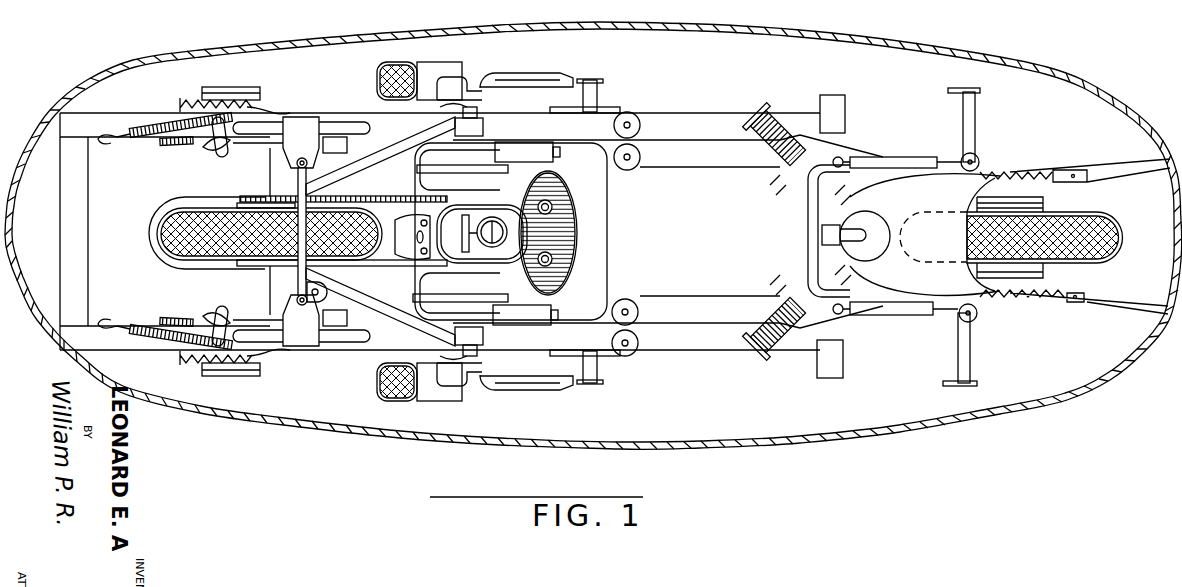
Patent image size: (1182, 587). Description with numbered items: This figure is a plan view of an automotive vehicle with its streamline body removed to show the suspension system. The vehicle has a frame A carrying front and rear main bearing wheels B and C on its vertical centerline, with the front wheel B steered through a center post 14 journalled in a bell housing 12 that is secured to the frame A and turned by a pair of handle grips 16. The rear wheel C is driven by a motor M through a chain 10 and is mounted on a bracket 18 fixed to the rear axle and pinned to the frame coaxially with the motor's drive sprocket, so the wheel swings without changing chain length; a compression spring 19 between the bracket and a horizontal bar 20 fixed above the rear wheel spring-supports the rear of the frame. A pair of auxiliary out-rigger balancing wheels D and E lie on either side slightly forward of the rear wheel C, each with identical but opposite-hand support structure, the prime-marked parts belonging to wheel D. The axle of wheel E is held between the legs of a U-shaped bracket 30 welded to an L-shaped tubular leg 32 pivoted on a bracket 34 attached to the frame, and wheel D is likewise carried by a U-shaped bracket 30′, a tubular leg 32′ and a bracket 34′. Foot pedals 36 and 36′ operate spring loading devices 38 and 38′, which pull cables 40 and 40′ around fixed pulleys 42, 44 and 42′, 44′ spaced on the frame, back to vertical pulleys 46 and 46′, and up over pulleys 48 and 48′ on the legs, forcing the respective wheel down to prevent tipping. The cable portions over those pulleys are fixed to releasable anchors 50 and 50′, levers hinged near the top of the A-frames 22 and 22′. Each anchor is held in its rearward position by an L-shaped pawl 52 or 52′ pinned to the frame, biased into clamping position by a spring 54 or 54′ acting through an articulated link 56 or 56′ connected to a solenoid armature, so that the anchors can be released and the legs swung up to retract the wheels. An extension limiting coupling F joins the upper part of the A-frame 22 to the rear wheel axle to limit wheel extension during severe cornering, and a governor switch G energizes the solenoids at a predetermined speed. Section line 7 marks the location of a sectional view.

The frame A is at (690, 114).
The front main bearing wheel B is at (1113, 212).
The rear main bearing wheel C is at (184, 207).
The auxiliary balancing wheel D is at (395, 64).
The auxiliary balancing wheel E is at (381, 399).
The extension limiting coupling F is at (297, 165).
The governor switch G is at (408, 251).
The motor M is at (609, 238).
The section line 7- 7 is at (362, 192).
The chain 10 is at (378, 200).
The bell housing 12 is at (857, 200).
The center post 14 is at (872, 232).
The handle grips 16 is at (780, 113).
The bracket 18 is at (363, 306).
The compression spring 19 is at (331, 280).
The horizontal bar 20 is at (303, 276).
The A-frame 22 is at (337, 343).
The A-frame 22′ is at (340, 125).
The U-shaped bracket 30 is at (430, 398).
The U-shaped bracket 30′ is at (437, 66).
The L-shaped tubular leg 32 is at (550, 393).
The L-shaped tubular leg 32′ is at (507, 76).
The bracket 34 is at (593, 372).
The bracket 34′ is at (597, 100).
The foot pedal 36 is at (973, 360).
The foot pedal 36′ is at (969, 113).
The spring loading device 38 is at (893, 312).
The spring loading device 38′ is at (913, 157).
The cable 40 is at (707, 305).
The cable 40′ is at (720, 163).
The fixed pulley 42 is at (637, 307).
The fixed pulley 42′ is at (630, 163).
The fixed pulley 44 is at (637, 353).
The fixed pulley 44′ is at (633, 115).
The vertical pulley 46 is at (478, 365).
The vertical pulley 46′ is at (497, 99).
The pulley 48 is at (482, 394).
The pulley 48′ is at (420, 122).
The releasable anchor 50 is at (180, 360).
The releasable anchor 50′ is at (182, 100).
The L-shaped pawl 52 is at (214, 311).
The L-shaped pawl 52′ is at (219, 136).
The spring 54 is at (182, 320).
The spring 54′ is at (165, 128).
The articulated link 56 is at (213, 320).
The articulated link 56′ is at (216, 143).